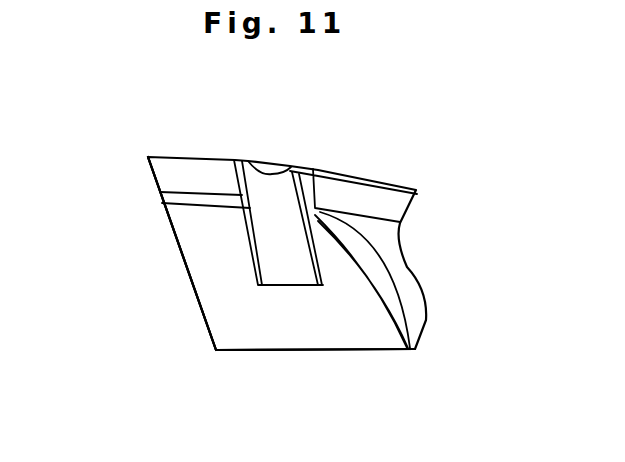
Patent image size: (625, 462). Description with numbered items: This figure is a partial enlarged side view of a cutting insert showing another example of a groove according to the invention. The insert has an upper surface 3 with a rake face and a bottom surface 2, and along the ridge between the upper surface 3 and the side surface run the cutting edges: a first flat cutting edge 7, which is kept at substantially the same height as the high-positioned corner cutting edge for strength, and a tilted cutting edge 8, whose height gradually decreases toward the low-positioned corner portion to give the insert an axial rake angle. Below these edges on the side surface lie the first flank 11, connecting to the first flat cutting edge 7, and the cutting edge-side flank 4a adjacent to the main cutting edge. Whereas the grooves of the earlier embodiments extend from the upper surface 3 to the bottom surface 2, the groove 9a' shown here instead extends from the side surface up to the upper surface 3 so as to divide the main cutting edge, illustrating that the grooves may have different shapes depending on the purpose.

The bottom surface 2 is at (283, 350).
The upper surface 3 is at (277, 232).
The cutting edge-side flank 4a is at (182, 173).
The first flat cutting edge 7 is at (198, 158).
The tilted cutting edge 8 is at (370, 181).
The groove 9a' is at (326, 136).
The first flank 11 is at (253, 310).